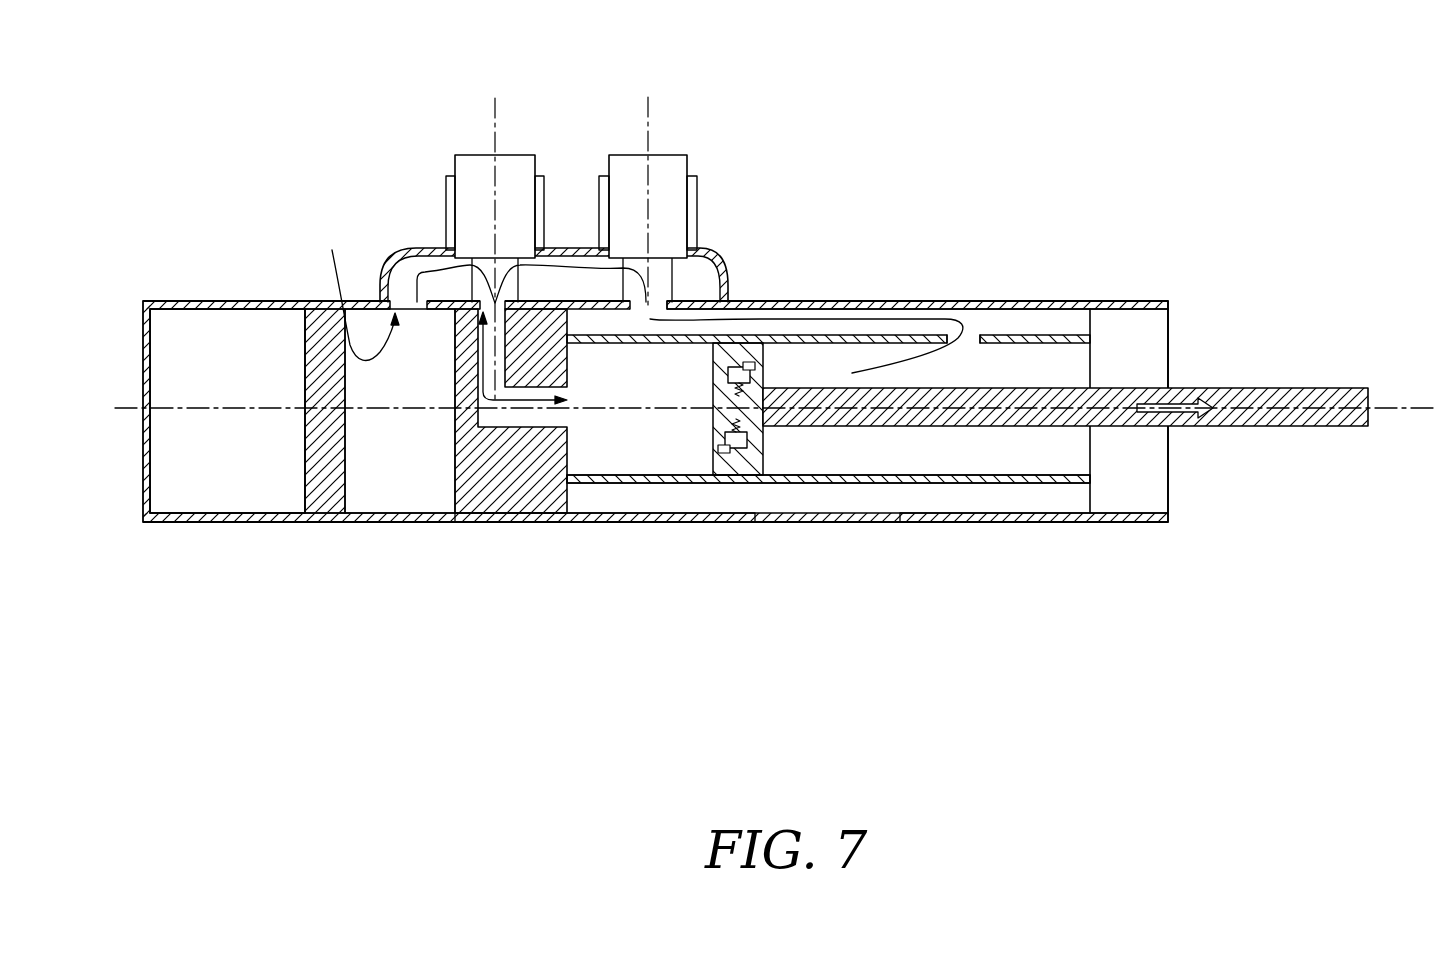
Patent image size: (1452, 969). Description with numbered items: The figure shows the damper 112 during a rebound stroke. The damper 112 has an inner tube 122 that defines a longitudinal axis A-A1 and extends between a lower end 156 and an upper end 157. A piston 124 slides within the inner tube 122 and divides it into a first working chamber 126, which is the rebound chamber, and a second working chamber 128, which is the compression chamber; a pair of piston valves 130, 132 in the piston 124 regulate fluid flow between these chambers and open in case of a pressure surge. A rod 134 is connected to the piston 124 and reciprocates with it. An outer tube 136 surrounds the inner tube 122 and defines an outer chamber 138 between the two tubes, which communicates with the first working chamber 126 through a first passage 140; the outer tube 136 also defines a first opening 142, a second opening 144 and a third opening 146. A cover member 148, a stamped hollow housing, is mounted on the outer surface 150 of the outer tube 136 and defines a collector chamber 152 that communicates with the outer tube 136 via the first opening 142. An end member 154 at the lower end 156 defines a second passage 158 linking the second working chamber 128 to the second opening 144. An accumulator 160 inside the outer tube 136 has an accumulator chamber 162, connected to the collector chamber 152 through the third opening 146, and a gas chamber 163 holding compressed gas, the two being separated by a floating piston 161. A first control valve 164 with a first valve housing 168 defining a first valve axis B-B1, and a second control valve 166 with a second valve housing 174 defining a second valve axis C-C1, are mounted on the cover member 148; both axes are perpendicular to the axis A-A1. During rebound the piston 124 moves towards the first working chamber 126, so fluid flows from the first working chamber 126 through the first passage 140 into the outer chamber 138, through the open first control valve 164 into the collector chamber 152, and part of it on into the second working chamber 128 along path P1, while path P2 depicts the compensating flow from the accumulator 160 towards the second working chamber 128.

The damper 112 is at (763, 292).
The inner tube 122 is at (648, 484).
The piston 124 is at (740, 458).
The first working chamber 126 is at (977, 450).
The second working chamber 128 is at (683, 424).
The piston valve 130 is at (747, 364).
The piston valve 132 is at (725, 455).
The rod 134 is at (1298, 388).
The outer tube 136 is at (1050, 300).
The outer chamber 138 is at (866, 306).
The first passage 140 is at (967, 332).
The first opening 142 is at (638, 320).
The second opening 144 is at (473, 400).
The third opening 146 is at (372, 291).
The cover member 148 is at (730, 270).
The outer surface 150 is at (810, 292).
The collector chamber 152 is at (570, 252).
The end member 154 is at (520, 508).
The lower end 156 is at (577, 548).
The upper end 157 is at (1085, 538).
The second passage 158 is at (523, 428).
The accumulator 160 is at (203, 300).
The floating piston 161 is at (316, 523).
The accumulator chamber 162 is at (387, 486).
The gas chamber 163 is at (198, 383).
The first control valve 164 is at (667, 142).
The second control valve 166 is at (446, 147).
The first valve housing 168 is at (690, 163).
The second valve housing 174 is at (467, 162).
The path P1 is at (910, 322).
The path P2 is at (408, 252).
The longitudinal axis A-A1 is at (1402, 407).
The first valve axis B-B1 is at (646, 110).
The second valve axis C-C1 is at (493, 108).